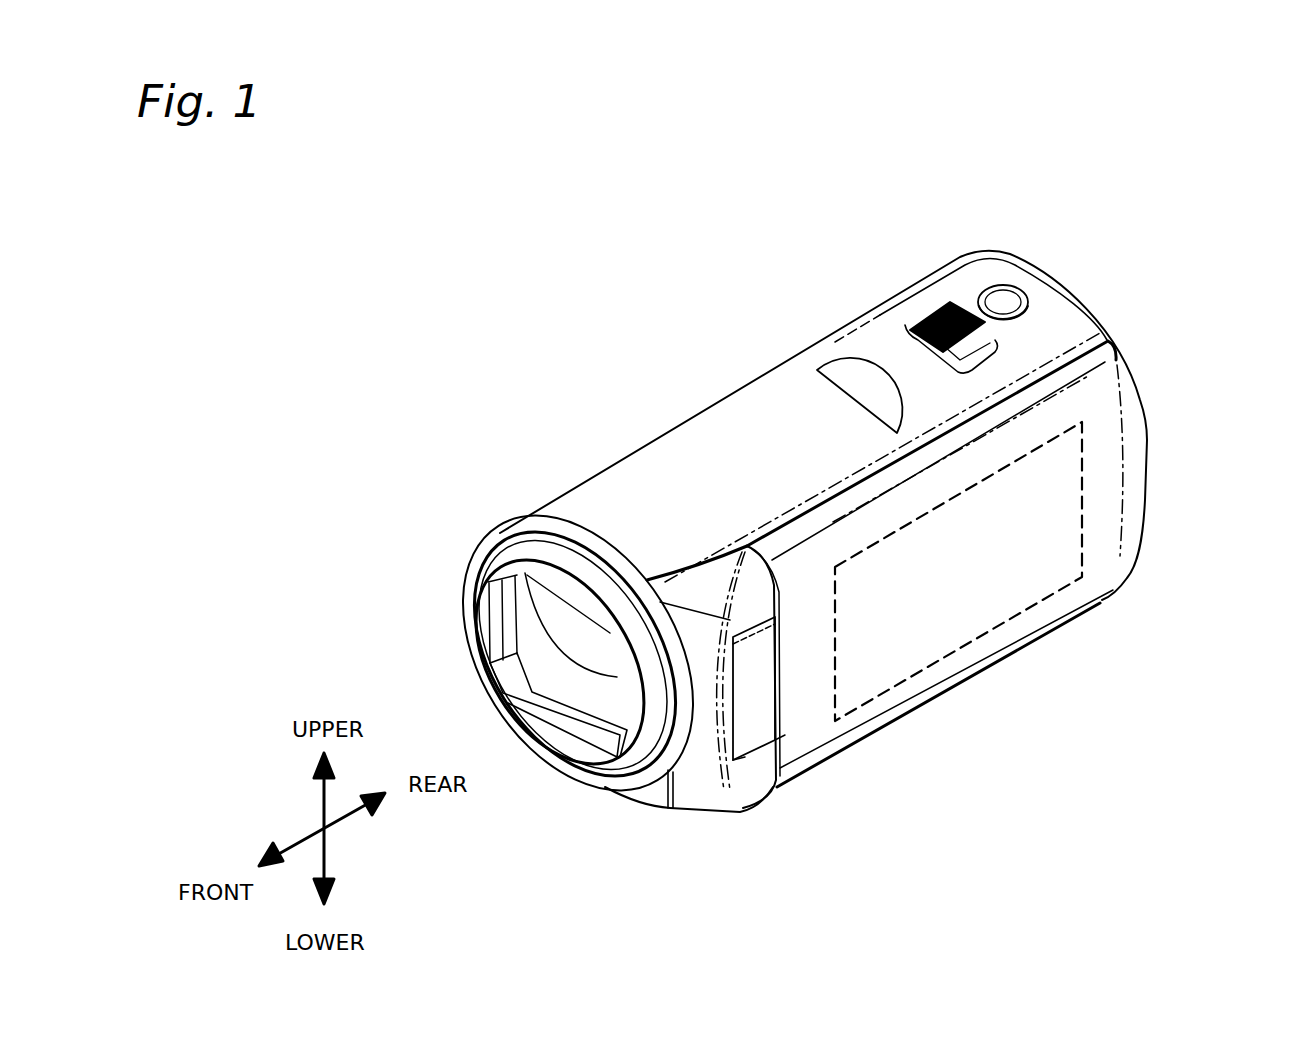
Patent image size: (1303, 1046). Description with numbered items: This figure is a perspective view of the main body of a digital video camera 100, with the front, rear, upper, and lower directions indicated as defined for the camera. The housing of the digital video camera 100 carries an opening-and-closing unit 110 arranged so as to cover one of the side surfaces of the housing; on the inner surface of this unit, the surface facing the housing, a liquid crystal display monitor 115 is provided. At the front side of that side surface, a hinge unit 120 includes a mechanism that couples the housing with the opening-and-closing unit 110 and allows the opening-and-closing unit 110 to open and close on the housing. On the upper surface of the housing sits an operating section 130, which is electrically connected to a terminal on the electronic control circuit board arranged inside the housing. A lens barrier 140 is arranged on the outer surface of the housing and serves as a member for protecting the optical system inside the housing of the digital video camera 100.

The digital video camera 100 is at (600, 355).
The opening-and-closing unit 110 is at (1097, 537).
The liquid crystal display (LCD) monitor 115 is at (945, 657).
The hinge unit 120 is at (750, 712).
The operating section 130 is at (967, 312).
The lens barrier 140 is at (555, 620).